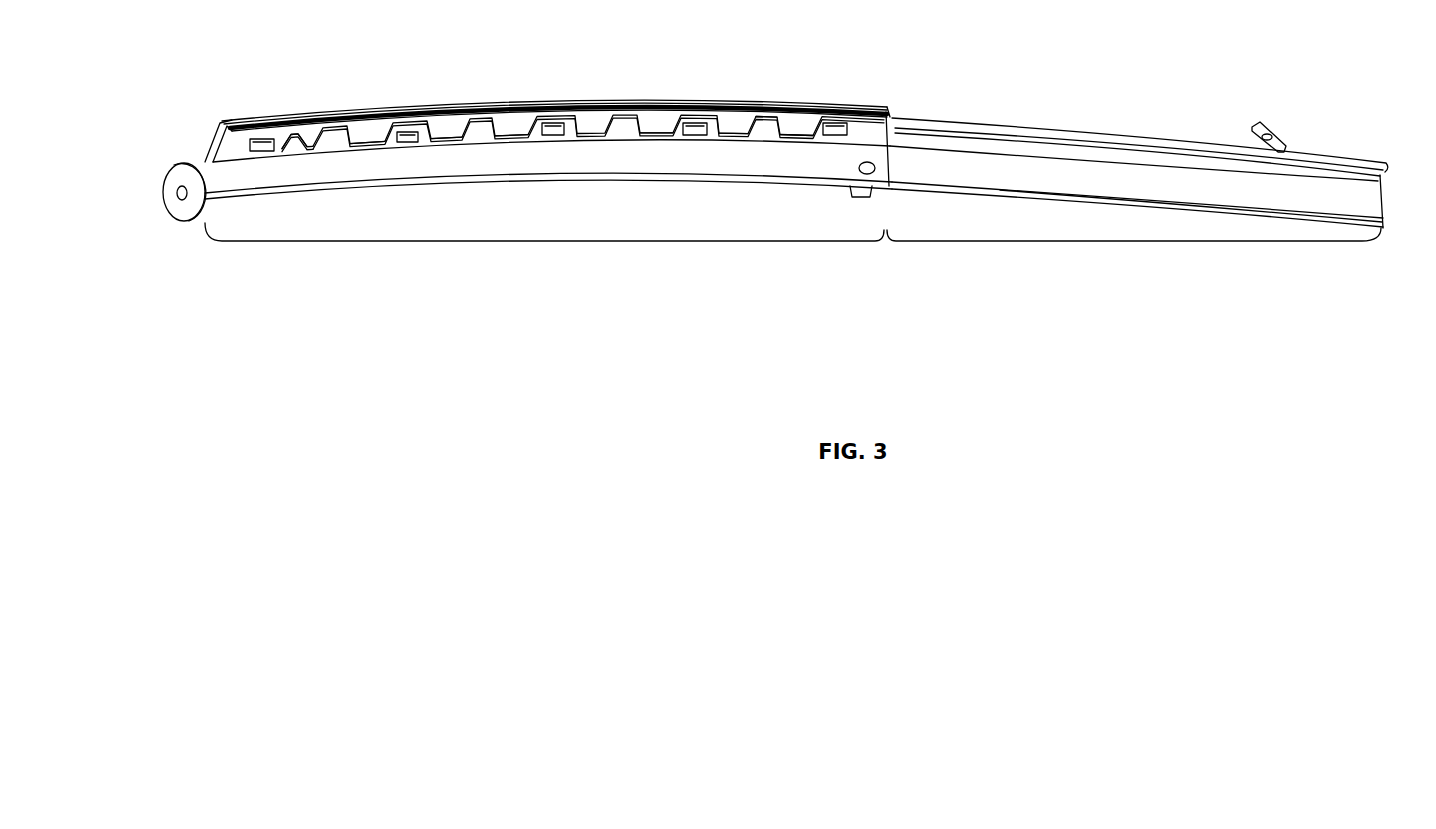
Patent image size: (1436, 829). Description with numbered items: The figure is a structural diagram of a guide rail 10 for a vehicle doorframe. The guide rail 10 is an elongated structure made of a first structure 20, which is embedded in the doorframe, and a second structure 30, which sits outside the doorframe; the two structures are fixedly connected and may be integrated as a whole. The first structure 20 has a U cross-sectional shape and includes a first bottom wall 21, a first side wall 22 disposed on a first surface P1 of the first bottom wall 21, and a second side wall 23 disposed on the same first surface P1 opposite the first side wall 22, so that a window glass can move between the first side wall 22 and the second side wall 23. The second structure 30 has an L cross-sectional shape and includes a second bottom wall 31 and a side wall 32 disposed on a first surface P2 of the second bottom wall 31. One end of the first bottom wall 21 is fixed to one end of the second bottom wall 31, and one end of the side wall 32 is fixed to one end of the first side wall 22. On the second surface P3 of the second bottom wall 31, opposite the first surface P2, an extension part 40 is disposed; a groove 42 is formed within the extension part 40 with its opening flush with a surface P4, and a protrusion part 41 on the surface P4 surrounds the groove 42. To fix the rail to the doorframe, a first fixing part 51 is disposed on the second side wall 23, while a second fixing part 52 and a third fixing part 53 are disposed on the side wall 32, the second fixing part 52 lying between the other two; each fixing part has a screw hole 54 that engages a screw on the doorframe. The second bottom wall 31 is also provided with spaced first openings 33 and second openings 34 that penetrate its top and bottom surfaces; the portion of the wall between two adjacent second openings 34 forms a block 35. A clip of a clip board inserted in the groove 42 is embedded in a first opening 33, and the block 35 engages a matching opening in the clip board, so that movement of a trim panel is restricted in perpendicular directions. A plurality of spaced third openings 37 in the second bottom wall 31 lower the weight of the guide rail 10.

The guide rail 10 is at (915, 74).
The first structure 20 is at (1105, 246).
The first bottom wall 21 is at (1370, 182).
The first side wall 22 is at (1368, 202).
The second side wall 23 is at (1375, 160).
The second structure 30 is at (615, 246).
The second bottom wall 31 is at (358, 147).
The side wall 32 is at (247, 187).
The first opening 33 is at (261, 138).
The second opening 34 is at (284, 150).
The block 35 is at (298, 150).
The third opening 37 is at (375, 143).
The extension part 40 is at (234, 120).
The protrusion part 41 is at (297, 118).
The groove 42 is at (367, 116).
The first fixing part 51 is at (1278, 141).
The second fixing part 52 is at (860, 190).
The third fixing part 53 is at (181, 211).
The screw hole 54 is at (179, 195).
The first surface P1 is at (929, 147).
The first surface P2 is at (235, 149).
The second surface P3 is at (760, 116).
The surface P4 is at (226, 121).